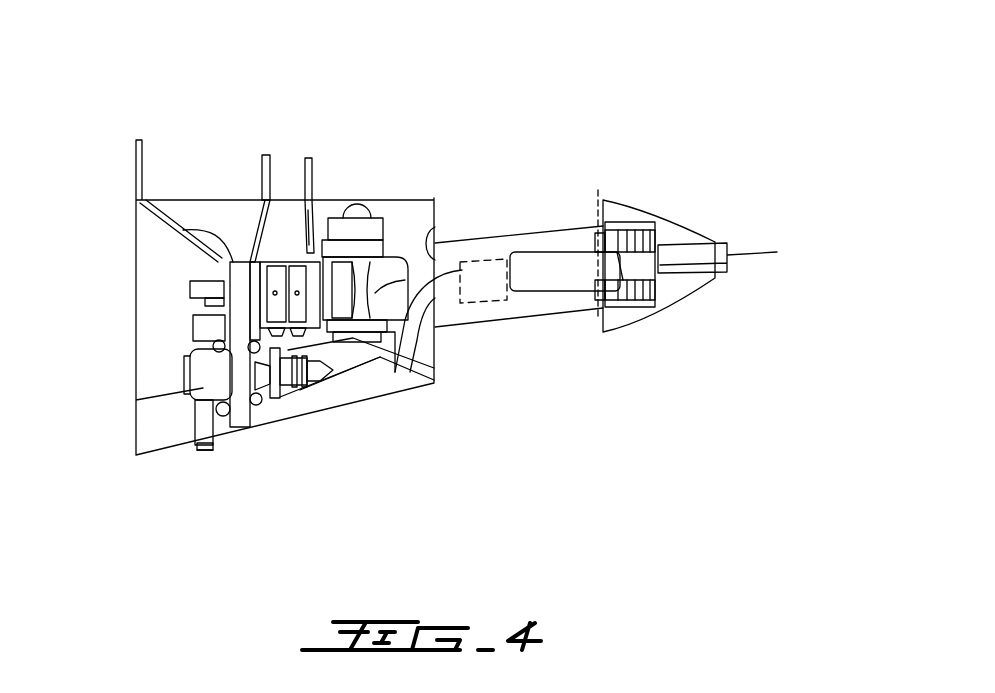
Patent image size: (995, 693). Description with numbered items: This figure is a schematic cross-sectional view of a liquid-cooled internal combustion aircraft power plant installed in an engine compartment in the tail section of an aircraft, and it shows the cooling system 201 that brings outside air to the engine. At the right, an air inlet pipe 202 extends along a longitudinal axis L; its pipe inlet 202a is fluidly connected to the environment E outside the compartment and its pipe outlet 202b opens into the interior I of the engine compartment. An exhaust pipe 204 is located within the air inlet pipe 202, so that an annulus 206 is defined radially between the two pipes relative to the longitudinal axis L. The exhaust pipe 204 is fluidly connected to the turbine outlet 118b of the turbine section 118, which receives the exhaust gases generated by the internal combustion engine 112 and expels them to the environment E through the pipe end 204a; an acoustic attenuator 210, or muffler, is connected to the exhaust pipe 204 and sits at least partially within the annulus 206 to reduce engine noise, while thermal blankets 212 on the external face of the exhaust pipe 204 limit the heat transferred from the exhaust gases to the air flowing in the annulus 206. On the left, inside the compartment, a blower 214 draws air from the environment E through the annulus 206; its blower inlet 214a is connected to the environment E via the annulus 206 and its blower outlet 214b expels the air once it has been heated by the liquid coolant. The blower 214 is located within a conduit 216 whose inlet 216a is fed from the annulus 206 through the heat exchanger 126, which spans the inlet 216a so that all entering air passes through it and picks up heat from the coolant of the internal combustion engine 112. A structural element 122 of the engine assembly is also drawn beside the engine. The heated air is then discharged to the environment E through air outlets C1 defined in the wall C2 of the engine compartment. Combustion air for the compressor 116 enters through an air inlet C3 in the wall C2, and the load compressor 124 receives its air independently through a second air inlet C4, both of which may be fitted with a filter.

The internal combustion engine 112 is at (295, 251).
The compressor 116 is at (235, 428).
The turbine section 118 is at (355, 470).
The turbine outlet 118b is at (382, 472).
The brace 122 is at (143, 237).
The load compressor 124 is at (190, 424).
The heat exchanger 126 is at (361, 204).
The cooling system 201 is at (352, 364).
The air inlet pipe 202 is at (586, 224).
The pipe inlet 202a is at (615, 243).
The pipe outlet 202b is at (435, 240).
The exhaust pipe 204 is at (485, 290).
The coupling inlet 204a is at (325, 380).
The annulus 206 is at (570, 313).
The acoustic attenuator 210 is at (587, 217).
The thermal blankets 212 is at (515, 305).
The blower 214 is at (369, 235).
The blower inlet 214a is at (350, 229).
The blower outlet 214b is at (400, 343).
The conduit 216 is at (285, 135).
The inlet of the conduit 216a is at (330, 243).
The air outlets C1 is at (428, 384).
The wall of the engine compartment C2 is at (222, 196).
The air inlet C3 is at (266, 411).
The second air inlet C4 is at (203, 450).
The interior of the engine compartment I is at (162, 330).
The environment E is at (846, 229).
The longitudinal axis L is at (750, 258).